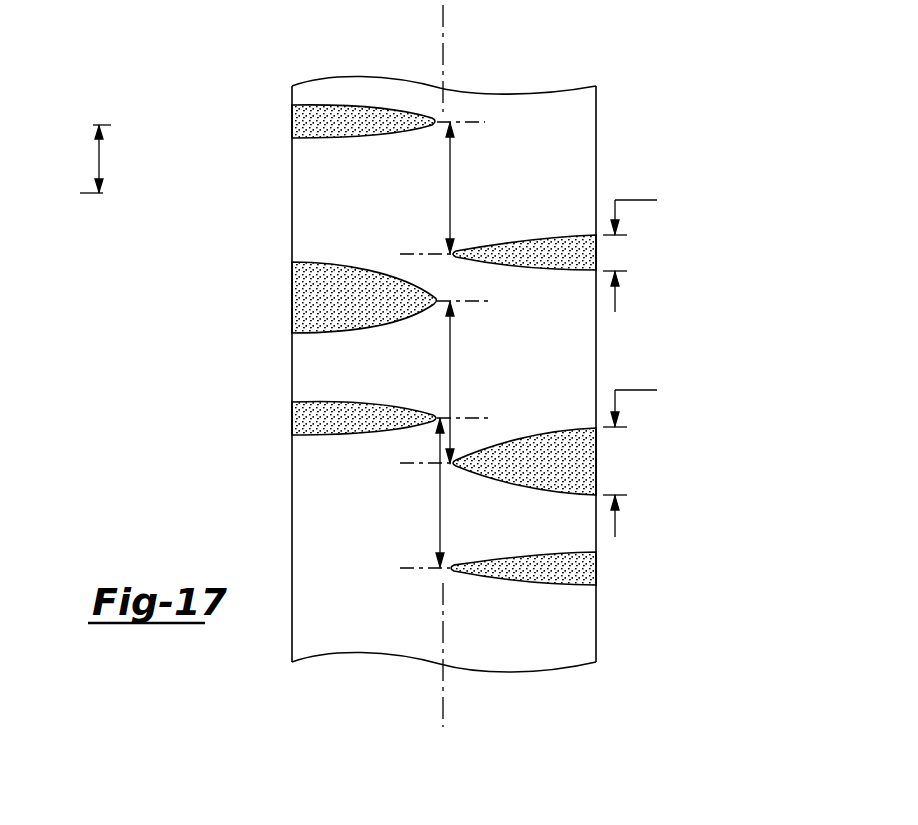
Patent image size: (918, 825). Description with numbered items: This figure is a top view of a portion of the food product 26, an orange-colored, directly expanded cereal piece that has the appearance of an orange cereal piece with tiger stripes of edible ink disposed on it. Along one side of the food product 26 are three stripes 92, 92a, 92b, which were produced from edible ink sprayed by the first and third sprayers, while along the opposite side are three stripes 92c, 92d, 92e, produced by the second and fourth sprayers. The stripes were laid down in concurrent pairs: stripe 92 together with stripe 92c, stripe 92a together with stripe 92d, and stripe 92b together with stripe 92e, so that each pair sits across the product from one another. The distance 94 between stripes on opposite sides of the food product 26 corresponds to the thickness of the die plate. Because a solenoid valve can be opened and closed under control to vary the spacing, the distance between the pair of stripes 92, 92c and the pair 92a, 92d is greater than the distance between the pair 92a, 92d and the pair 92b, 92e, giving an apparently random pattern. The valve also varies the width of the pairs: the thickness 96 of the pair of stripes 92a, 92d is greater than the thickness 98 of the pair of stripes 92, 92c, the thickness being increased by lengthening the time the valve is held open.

The food product 26 is at (513, 117).
The stripe 92 is at (252, 120).
The stripe 92a is at (267, 278).
The stripe 92b is at (267, 420).
The stripe 92c is at (628, 255).
The stripe 92d is at (643, 463).
The stripe 92e is at (636, 572).
The distance 94 is at (450, 180).
The thickness 96 is at (645, 390).
The thickness 98 is at (648, 200).